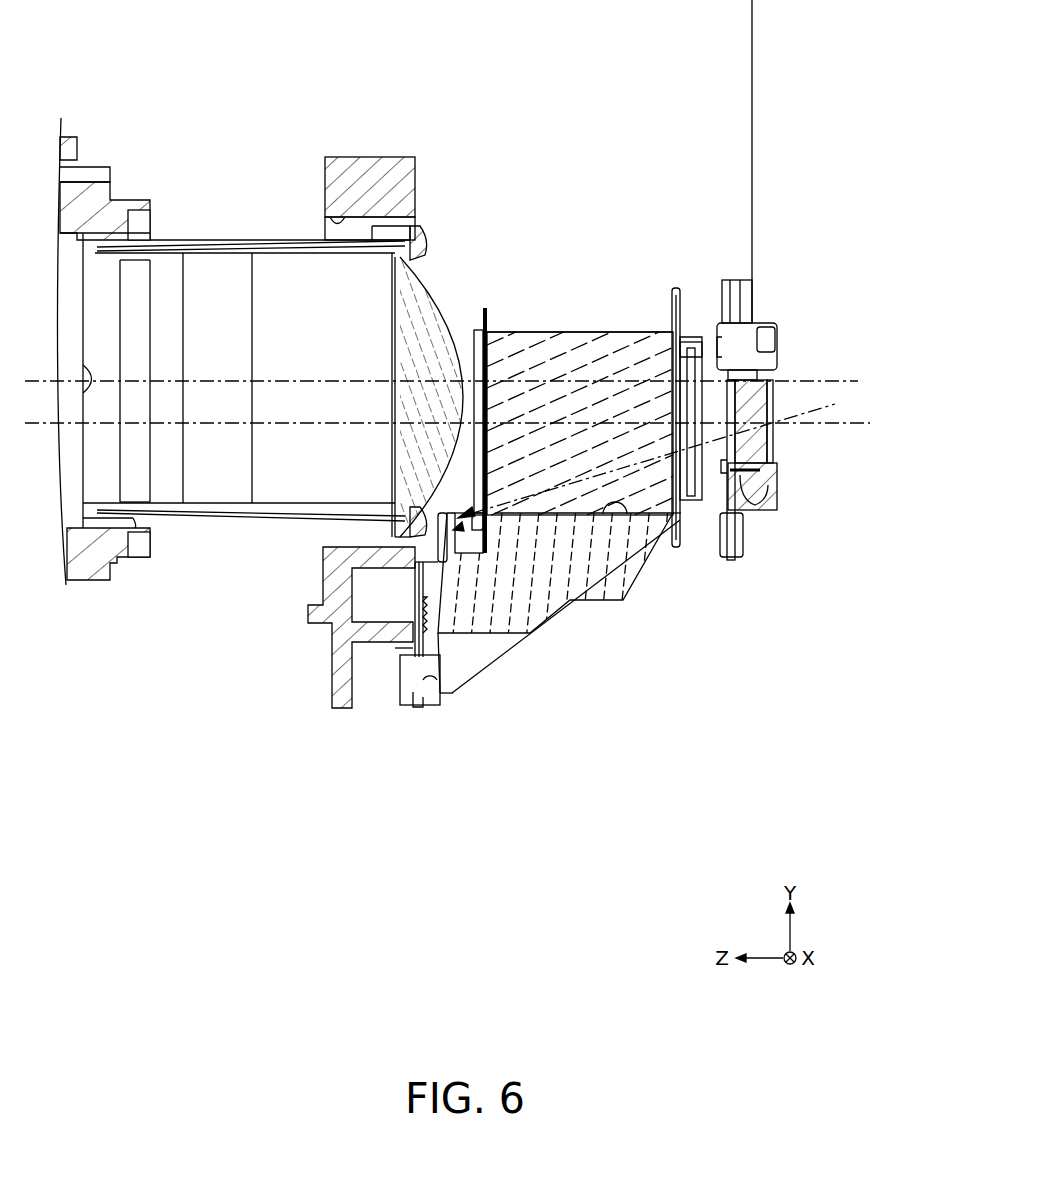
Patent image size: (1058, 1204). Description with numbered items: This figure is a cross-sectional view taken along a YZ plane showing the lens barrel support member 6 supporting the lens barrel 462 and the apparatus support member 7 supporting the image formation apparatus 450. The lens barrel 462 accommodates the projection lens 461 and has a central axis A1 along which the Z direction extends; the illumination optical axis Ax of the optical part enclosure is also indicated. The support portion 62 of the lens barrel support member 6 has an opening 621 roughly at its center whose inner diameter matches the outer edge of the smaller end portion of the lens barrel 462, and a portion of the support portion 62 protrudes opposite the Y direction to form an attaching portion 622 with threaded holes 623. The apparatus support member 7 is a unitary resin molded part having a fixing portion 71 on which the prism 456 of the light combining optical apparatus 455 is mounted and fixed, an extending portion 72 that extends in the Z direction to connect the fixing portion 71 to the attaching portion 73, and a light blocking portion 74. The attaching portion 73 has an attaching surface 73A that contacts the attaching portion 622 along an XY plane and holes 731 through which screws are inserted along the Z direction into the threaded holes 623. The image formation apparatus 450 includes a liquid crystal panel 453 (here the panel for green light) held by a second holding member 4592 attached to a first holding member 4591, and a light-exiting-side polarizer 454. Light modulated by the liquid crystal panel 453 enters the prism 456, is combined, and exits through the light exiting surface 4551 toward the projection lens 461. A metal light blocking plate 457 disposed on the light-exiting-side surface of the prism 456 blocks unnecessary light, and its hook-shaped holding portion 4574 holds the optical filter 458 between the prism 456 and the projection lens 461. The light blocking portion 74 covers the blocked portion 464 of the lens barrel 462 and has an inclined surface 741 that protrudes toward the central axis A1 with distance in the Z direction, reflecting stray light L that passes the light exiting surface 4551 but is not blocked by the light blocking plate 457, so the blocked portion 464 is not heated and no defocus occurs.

The lens barrel support member 6 is at (452, 97).
The support portion 62 is at (376, 156).
The opening 621 is at (345, 232).
The attaching portion 622 is at (410, 708).
The threaded holes 623 is at (393, 667).
The projection lens 461 is at (433, 280).
The lens barrel 462 is at (193, 528).
The blocked portion 464 is at (497, 647).
The light exiting surface 4551 is at (476, 330).
The light blocking plate 457 is at (488, 318).
The optical filter 458 is at (490, 340).
The cross dichroic prism 456 is at (596, 331).
The light combining optical apparatus 455 is at (572, 247).
The holding portion 4574 is at (460, 528).
The first holding member 4591 is at (675, 288).
The second holding member 4592 is at (735, 280).
The image formation apparatus 450 is at (790, 268).
The liquid crystal panel 453 is at (777, 345).
The light-exiting-side polarizer 454 is at (740, 470).
The stray light L is at (838, 408).
The central axis A1 is at (304, 372).
The illumination optical axis Ax is at (304, 428).
The apparatus support member 7 is at (643, 578).
The fixing portion 71 is at (665, 522).
The extending portion 72 is at (620, 572).
The attaching portion 73 is at (443, 665).
The attaching surface 73A is at (415, 712).
The holes 731 is at (445, 695).
The light blocking portion 74 is at (473, 563).
The inclined surface 741 is at (462, 530).